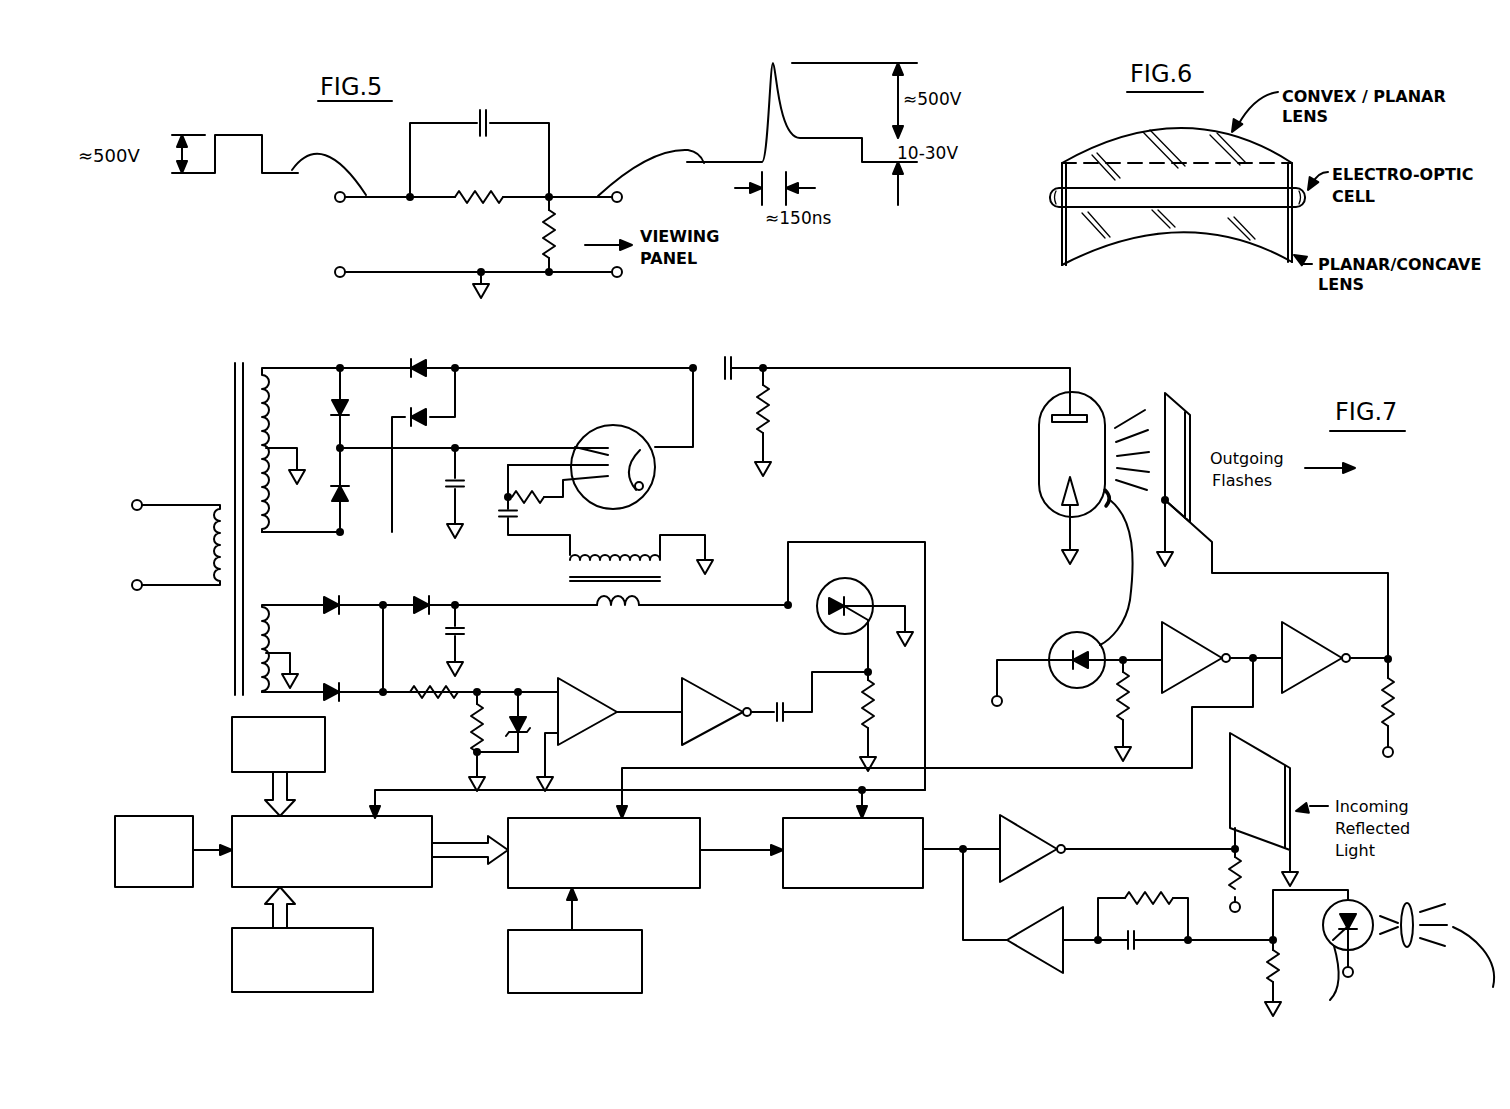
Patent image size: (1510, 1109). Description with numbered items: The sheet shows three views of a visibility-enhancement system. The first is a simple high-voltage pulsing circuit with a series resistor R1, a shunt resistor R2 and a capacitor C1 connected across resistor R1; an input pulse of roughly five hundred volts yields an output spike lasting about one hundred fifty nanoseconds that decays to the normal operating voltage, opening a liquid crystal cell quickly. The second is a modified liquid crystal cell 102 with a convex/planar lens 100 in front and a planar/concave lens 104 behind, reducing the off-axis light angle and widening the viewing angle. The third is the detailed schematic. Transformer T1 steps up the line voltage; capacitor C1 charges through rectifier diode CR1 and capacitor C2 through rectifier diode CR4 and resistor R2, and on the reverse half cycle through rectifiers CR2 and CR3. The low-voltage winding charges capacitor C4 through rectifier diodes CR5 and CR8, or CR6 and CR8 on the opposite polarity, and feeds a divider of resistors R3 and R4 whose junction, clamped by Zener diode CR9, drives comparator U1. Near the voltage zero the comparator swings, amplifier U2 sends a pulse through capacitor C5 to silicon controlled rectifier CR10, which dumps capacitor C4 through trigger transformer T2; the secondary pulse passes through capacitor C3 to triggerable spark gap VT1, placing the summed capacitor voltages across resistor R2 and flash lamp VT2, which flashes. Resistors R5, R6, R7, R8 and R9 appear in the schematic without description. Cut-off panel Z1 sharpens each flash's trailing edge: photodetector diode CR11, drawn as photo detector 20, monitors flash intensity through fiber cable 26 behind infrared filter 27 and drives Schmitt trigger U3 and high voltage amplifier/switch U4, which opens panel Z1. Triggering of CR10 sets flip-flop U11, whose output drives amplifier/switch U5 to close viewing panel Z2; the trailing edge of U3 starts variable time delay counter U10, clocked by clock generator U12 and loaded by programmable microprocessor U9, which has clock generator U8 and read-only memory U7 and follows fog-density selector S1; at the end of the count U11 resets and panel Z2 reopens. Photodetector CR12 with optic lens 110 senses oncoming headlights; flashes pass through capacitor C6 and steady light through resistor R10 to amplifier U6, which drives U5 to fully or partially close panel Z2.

In FIG. 5, the capacitor C1 is at (483, 112).
In FIG. 7, the capacitor C1 is at (441, 483).
In FIG. 5, the series resistor R1 is at (490, 212).
In FIG. 7, the series resistor R1 is at (524, 502).
In FIG. 5, the shunt resistor R2 is at (557, 238).
In FIG. 7, the shunt resistor R2 is at (773, 411).
In FIG. 6, the convex/planar lens 100 is at (1124, 142).
In FIG. 6, the cell 102 is at (1050, 200).
In FIG. 6, the planar/concave lens 104 is at (1062, 248).
In FIG. 7, the transformer T1 is at (230, 378).
In FIG. 7, the rectifier diode CR1 is at (333, 408).
In FIG. 7, the rectifier CR2 is at (335, 499).
In FIG. 7, the rectifier CR3 is at (419, 360).
In FIG. 7, the rectifier diode CR4 is at (430, 410).
In FIG. 7, the capacitor C2 is at (730, 357).
In FIG. 7, the triggerable spark gap VT1 is at (646, 470).
In FIG. 7, the capacitor C3 is at (500, 520).
In FIG. 7, the trigger transformer T2 is at (620, 570).
In FIG. 7, the rectifier diode CR5 is at (356, 574).
In FIG. 7, the rectifier diode CR8 is at (422, 597).
In FIG. 7, the rectifier CR6 is at (355, 662).
In FIG. 7, the capacitor C4 is at (466, 631).
In FIG. 7, the resistor R3 is at (446, 686).
In FIG. 7, the resistor R4 is at (470, 725).
In FIG. 7, the Zener diode CR9 is at (528, 718).
In FIG. 7, the comparator U1 is at (582, 698).
In FIG. 7, the amplifier U2 is at (698, 696).
In FIG. 7, the capacitor C5 is at (779, 702).
In FIG. 7, the silicon controlled rectifier CR10 is at (849, 596).
In FIG. 7, the resistor R5 is at (876, 712).
In FIG. 7, the read-only memory U7 is at (318, 748).
In FIG. 7, the clock generator U8 is at (160, 815).
In FIG. 7, the programmable microprocessor U9 is at (345, 822).
In FIG. 7, the variable time delay counter U10 is at (690, 838).
In FIG. 7, the flip-flop U11 is at (915, 838).
In FIG. 7, the clock generator U12 is at (640, 970).
In FIG. 7, the fog-density selector S1 is at (232, 940).
In FIG. 7, the flash lamp VT2 is at (1041, 420).
In FIG. 7, the cut-off panel Z1 is at (1187, 416).
In FIG. 7, the infrared filter 27 is at (1112, 497).
In FIG. 7, the fiber cable 26 is at (1135, 582).
In FIG. 7, the photodetector diode CR11 is at (1078, 632).
In FIG. 7, the photo detector 20 is at (1084, 683).
In FIG. 7, the resistor R6 is at (1128, 698).
In FIG. 7, the Schmitt trigger U3 is at (1178, 670).
In FIG. 7, the high voltage amplifier/switch U4 is at (1300, 650).
In FIG. 7, the resistor R7 is at (1394, 702).
In FIG. 7, the viewing panel Z2 is at (1258, 772).
In FIG. 7, the high voltage amplifier/switch U5 is at (1025, 842).
In FIG. 7, the amplifier U6 is at (1042, 928).
In FIG. 7, the resistor R8 is at (1230, 880).
In FIG. 7, the capacitor C6 is at (1133, 952).
In FIG. 7, the resistor R10 is at (1148, 890).
In FIG. 7, the resistor R9 is at (1254, 978).
In FIG. 7, the photodetector CR12 is at (1358, 903).
In FIG. 7, the optic lens 110 is at (1422, 945).